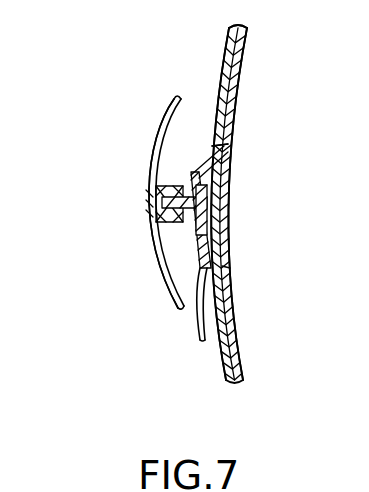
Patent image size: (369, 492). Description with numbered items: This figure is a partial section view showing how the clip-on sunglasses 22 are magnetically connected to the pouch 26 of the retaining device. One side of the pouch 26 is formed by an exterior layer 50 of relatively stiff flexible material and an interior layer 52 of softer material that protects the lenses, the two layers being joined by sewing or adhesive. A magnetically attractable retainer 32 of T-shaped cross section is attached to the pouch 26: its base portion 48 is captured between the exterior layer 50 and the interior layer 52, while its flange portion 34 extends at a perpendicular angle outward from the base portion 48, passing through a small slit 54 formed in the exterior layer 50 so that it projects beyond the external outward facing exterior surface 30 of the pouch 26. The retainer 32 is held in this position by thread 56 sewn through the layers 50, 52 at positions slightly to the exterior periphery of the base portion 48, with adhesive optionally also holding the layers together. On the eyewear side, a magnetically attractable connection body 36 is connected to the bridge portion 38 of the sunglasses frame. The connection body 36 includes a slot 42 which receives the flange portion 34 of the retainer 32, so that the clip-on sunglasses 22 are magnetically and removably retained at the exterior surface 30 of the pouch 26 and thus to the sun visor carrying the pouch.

The clip-on sunglasses 22 is at (128, 134).
The pouch 26 is at (259, 388).
The exterior surface 30 is at (229, 30).
The retainer 32 is at (222, 198).
The flange portion 34 is at (193, 186).
The connection body 36 is at (151, 188).
The bridge portion 38 is at (152, 208).
The slot 42 is at (167, 244).
The base portion 48 is at (210, 233).
The exterior layer 50 is at (242, 28).
The interior layer 52 is at (239, 68).
The slit 54 is at (203, 317).
The thread 56 is at (240, 152).